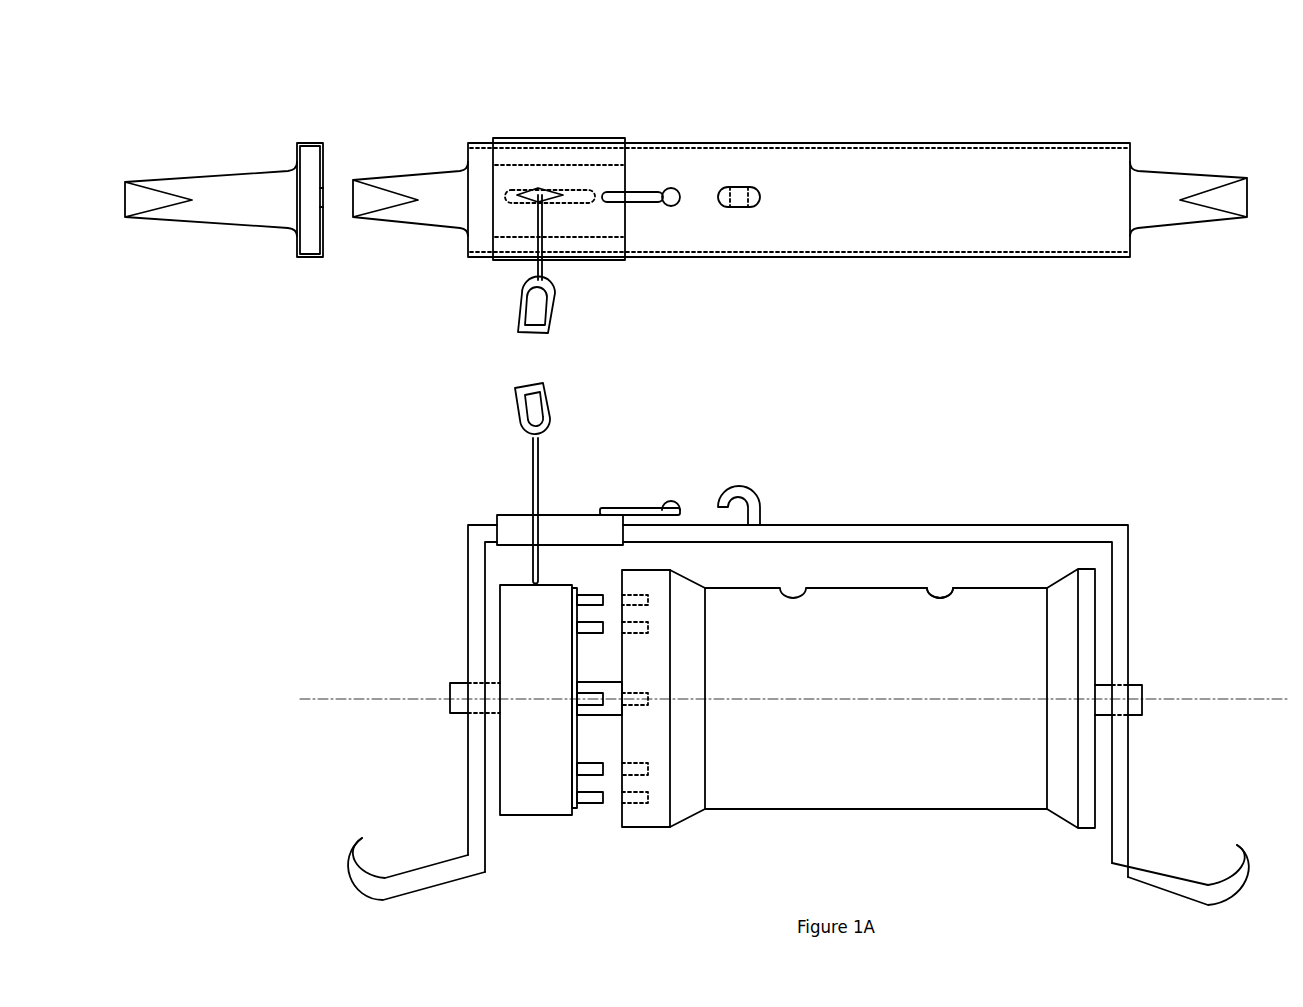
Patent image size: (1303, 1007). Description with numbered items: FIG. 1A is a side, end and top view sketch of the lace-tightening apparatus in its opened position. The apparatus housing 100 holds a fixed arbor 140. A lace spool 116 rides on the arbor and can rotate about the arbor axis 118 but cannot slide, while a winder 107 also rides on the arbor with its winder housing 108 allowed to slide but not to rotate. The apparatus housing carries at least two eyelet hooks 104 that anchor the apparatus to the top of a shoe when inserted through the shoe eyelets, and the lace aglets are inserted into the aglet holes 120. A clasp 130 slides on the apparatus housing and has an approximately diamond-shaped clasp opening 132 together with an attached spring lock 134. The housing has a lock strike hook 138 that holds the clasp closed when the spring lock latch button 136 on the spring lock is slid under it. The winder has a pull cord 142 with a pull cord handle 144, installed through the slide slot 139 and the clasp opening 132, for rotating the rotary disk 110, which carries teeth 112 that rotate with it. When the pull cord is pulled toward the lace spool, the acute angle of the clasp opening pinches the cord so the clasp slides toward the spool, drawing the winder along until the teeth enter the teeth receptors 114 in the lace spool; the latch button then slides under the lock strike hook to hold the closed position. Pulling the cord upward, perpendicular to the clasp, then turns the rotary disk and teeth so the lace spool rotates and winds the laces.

The apparatus housing 100 is at (1043, 142).
The eyelet hooks 104 is at (362, 838).
The winder 107 is at (500, 588).
The winder housing 108 is at (535, 815).
The rotary disk 110 is at (575, 813).
The teeth 112 is at (602, 805).
The teeth receptors 114 is at (647, 803).
The lace spool 116 is at (922, 810).
The arbor axis 118 is at (943, 706).
The aglet holes 120 is at (940, 592).
The clasp 130 is at (332, 145).
The clasp opening 132 is at (552, 190).
The spring lock 134 is at (647, 190).
The spring lock latch button 136 is at (672, 192).
The lock strike hook 138 is at (748, 187).
The slide slot 139 is at (577, 203).
The fixed arbor 140 is at (1142, 685).
The pull cord 142 is at (530, 470).
The pull cord handle 144 is at (515, 392).